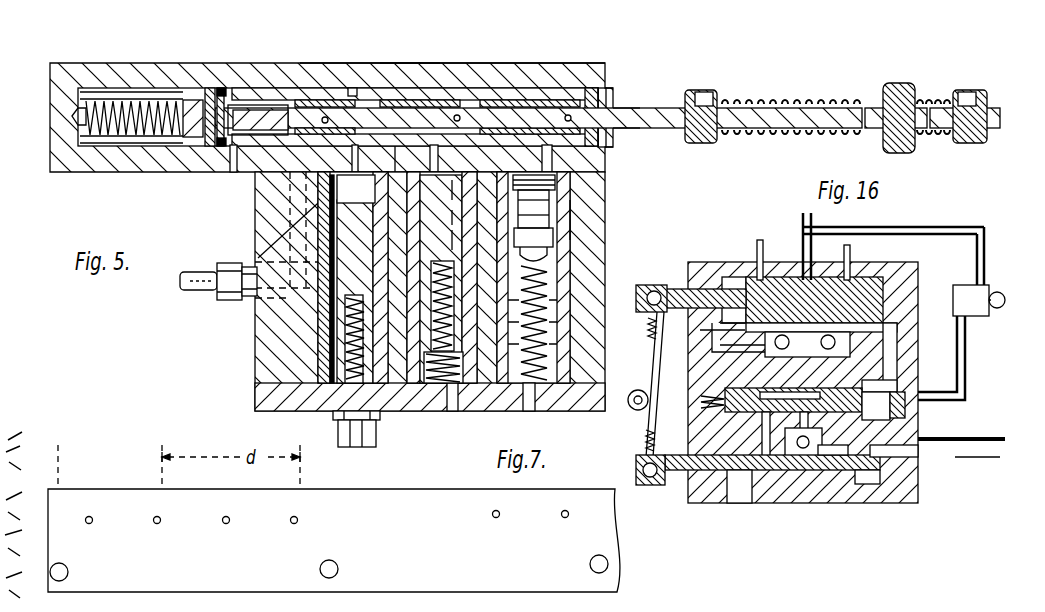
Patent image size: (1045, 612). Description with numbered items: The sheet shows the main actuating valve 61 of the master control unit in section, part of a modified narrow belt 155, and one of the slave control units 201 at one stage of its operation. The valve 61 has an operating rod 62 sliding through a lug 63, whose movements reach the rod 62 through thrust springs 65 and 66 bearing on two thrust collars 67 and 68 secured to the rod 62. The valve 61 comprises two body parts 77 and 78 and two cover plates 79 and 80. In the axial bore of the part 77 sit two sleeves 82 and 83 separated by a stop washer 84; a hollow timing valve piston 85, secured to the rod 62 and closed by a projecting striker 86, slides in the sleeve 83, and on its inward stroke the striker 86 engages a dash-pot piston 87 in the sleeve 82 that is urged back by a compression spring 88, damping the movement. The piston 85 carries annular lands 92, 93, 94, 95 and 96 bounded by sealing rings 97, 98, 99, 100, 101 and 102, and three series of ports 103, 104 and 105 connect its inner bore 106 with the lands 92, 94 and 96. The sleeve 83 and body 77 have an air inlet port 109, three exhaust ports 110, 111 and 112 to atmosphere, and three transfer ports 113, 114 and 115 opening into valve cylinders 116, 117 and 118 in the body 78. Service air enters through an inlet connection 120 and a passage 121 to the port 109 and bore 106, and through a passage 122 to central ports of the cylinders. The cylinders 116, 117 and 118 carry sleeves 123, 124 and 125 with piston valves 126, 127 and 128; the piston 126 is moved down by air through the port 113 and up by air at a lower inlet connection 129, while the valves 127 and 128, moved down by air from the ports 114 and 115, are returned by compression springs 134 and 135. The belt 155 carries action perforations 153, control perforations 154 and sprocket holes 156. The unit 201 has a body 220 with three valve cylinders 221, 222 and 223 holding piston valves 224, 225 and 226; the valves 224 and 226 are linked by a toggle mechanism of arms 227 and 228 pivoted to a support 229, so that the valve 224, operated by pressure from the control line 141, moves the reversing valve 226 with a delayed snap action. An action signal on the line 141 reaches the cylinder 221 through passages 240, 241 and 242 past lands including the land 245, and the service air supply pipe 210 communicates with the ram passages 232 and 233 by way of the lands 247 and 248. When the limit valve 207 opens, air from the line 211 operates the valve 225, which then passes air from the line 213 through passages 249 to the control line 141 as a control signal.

In FIG. 5, the main actuating valve 61 is at (396, 80).
In FIG. 5, the operating rod 62 is at (666, 108).
In FIG. 5, the lug 63 is at (910, 88).
In FIG. 5, the thrust spring 65 is at (724, 100).
In FIG. 5, the thrust spring 66 is at (936, 100).
In FIG. 5, the thrust collar 67 is at (692, 90).
In FIG. 5, the thrust collar 68 is at (970, 90).
In FIG. 5, the body part 77 is at (403, 82).
In FIG. 5, the body part 78 is at (578, 220).
In FIG. 5, the cover plate 79 is at (60, 86).
In FIG. 5, the cover plate 80 is at (575, 400).
In FIG. 5, the sleeve 82 is at (122, 108).
In FIG. 5, the sleeve 83 is at (565, 92).
In FIG. 5, the stop washer 84 is at (209, 104).
In FIG. 5, the timing valve piston 85 is at (505, 104).
In FIG. 5, the projecting striker 86 is at (221, 98).
In FIG. 5, the dash-pot piston 87 is at (190, 104).
In FIG. 5, the compression spring 88 is at (96, 98).
In FIG. 5, the annular land 92 is at (292, 92).
In FIG. 5, the annular land 93 is at (410, 142).
In FIG. 5, the annular land 94 is at (460, 96).
In FIG. 5, the annular land 95 is at (540, 100).
In FIG. 5, the annular land 96 is at (607, 97).
In FIG. 5, the annular sealing ring 97 is at (262, 112).
In FIG. 5, the annular sealing ring 98 is at (338, 92).
In FIG. 5, the annular sealing ring 99 is at (440, 98).
In FIG. 5, the annular sealing ring 100 is at (492, 88).
In FIG. 5, the annular sealing ring 101 is at (594, 92).
In FIG. 5, the annular sealing ring 102 is at (616, 90).
In FIG. 5, the ports 103 is at (312, 100).
In FIG. 5, the ports 104 is at (505, 150).
In FIG. 5, the ports 105 is at (622, 135).
In FIG. 5, the inner bore 106 is at (618, 118).
In FIG. 5, the air inlet port 109 is at (280, 172).
In FIG. 5, the exhaust port 110 is at (232, 160).
In FIG. 5, the exhaust port 111 is at (356, 88).
In FIG. 5, the exhaust port 112 is at (484, 90).
In FIG. 5, the transfer port 113 is at (358, 159).
In FIG. 5, the transfer port 114 is at (428, 159).
In FIG. 5, the transfer port 115 is at (614, 150).
In FIG. 5, the valve cylinder 116 is at (326, 360).
In FIG. 5, the valve cylinder 117 is at (455, 400).
In FIG. 5, the valve cylinder 118 is at (560, 330).
In FIG. 5, the inlet connection 120 is at (220, 262).
In FIG. 5, the passage 121 is at (345, 196).
In FIG. 5, the passage 122 is at (258, 300).
In FIG. 5, the sleeve 123 is at (262, 263).
In FIG. 5, the sleeve 124 is at (455, 190).
In FIG. 5, the sleeve 125 is at (556, 210).
In FIG. 5, the piston valve 126 is at (353, 212).
In FIG. 5, the piston valve 127 is at (449, 218).
In FIG. 5, the piston valve 128 is at (556, 192).
In FIG. 5, the lower inlet connection 129 is at (378, 419).
In FIG. 5, the compression spring 134 is at (462, 248).
In FIG. 5, the compression spring 135 is at (550, 268).
In FIG. 16, the control line 141 is at (950, 437).
In FIG. 7, the action perforations 153 is at (156, 515).
In FIG. 7, the control perforations 154 is at (89, 515).
In FIG. 7, the narrow belt 155 is at (362, 494).
In FIG. 7, the sprocket holes 156 is at (330, 559).
In FIG. 16, the slave control unit 201 is at (920, 500).
In FIG. 16, the limit valve 207 is at (953, 300).
In FIG. 16, the service air supply pipe 210 is at (808, 260).
In FIG. 16, the line 211 is at (970, 240).
In FIG. 16, the line 213 is at (955, 358).
In FIG. 16, the body 220 is at (700, 503).
In FIG. 16, the valve cylinder 221 is at (728, 277).
In FIG. 16, the valve cylinder 222 is at (898, 400).
In FIG. 16, the valve cylinder 223 is at (747, 503).
In FIG. 16, the piston valve 224 is at (872, 268).
In FIG. 16, the piston valve 225 is at (897, 340).
In FIG. 16, the piston valve 226 is at (826, 475).
In FIG. 16, the arm 227 is at (650, 346).
In FIG. 16, the arm 228 is at (668, 434).
In FIG. 16, the support 229 is at (676, 403).
In FIG. 16, the passage 232 is at (735, 345).
In FIG. 16, the passage 233 is at (735, 360).
In FIG. 16, the passage 240 is at (904, 480).
In FIG. 16, the passage 241 is at (868, 472).
In FIG. 16, the passage 242 is at (795, 470).
In FIG. 16, the land 245 is at (803, 475).
In FIG. 16, the land 247 is at (848, 282).
In FIG. 16, the land 248 is at (770, 280).
In FIG. 16, the passages 249 is at (880, 390).